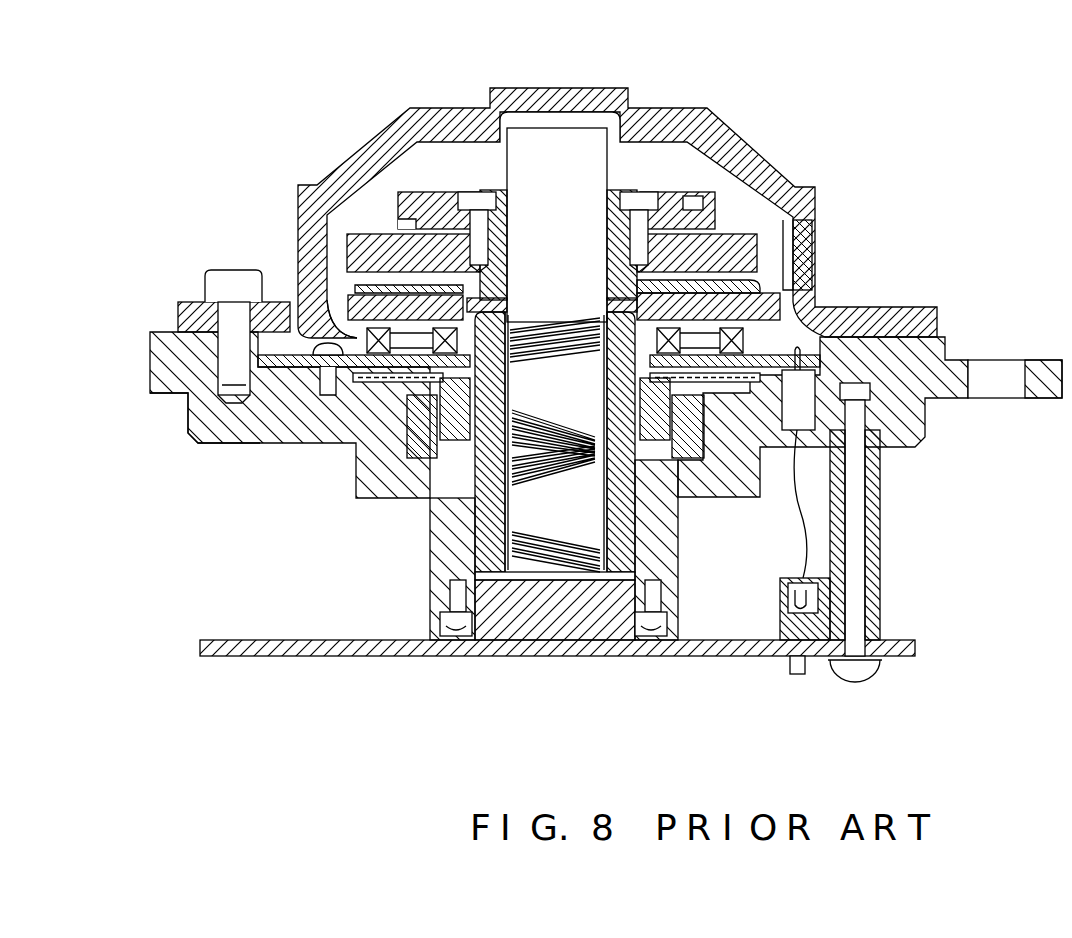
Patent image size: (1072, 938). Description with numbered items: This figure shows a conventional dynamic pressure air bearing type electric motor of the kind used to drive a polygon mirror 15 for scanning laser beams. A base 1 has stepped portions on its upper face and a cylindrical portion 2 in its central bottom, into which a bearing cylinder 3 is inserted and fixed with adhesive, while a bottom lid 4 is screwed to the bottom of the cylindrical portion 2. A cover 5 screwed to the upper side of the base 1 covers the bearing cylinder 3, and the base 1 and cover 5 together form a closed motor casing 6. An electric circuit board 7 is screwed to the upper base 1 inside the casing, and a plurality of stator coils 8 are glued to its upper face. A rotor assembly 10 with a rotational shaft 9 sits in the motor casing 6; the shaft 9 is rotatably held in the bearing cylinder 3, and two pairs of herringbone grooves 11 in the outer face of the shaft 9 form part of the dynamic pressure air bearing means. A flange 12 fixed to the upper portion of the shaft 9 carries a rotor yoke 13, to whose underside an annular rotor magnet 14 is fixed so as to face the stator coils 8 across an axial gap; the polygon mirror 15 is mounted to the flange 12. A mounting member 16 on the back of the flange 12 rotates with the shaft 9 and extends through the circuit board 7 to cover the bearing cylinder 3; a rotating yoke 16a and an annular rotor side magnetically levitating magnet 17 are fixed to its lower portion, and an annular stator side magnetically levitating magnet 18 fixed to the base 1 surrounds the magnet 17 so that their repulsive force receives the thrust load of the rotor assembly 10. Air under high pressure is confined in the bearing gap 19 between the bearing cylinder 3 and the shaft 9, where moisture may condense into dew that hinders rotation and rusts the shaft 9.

The base 1 is at (235, 445).
The cylindrical portion 2 is at (430, 562).
The bearing cylinder 3 is at (487, 527).
The bottom lid 4 is at (523, 632).
The cover 5 is at (440, 108).
The motor casing 6 is at (183, 420).
The electric circuit board 7 is at (297, 303).
The stator coils 8 is at (300, 330).
The rotational shaft 9 is at (583, 162).
The rotor assembly 10 is at (628, 180).
The herringbone grooves 11 is at (565, 405).
The flange 12 is at (607, 253).
The rotor yoke 13 is at (757, 290).
The rotor magnet 14 is at (817, 303).
The polygon mirror 15 is at (742, 237).
The mounting member 16 is at (508, 302).
The rotating yoke 16a is at (302, 362).
The rotor side magnetically levitating magnet 17 is at (437, 468).
The stator side magnetically levitating magnet 18 is at (455, 420).
The bearing gap 19 is at (495, 578).